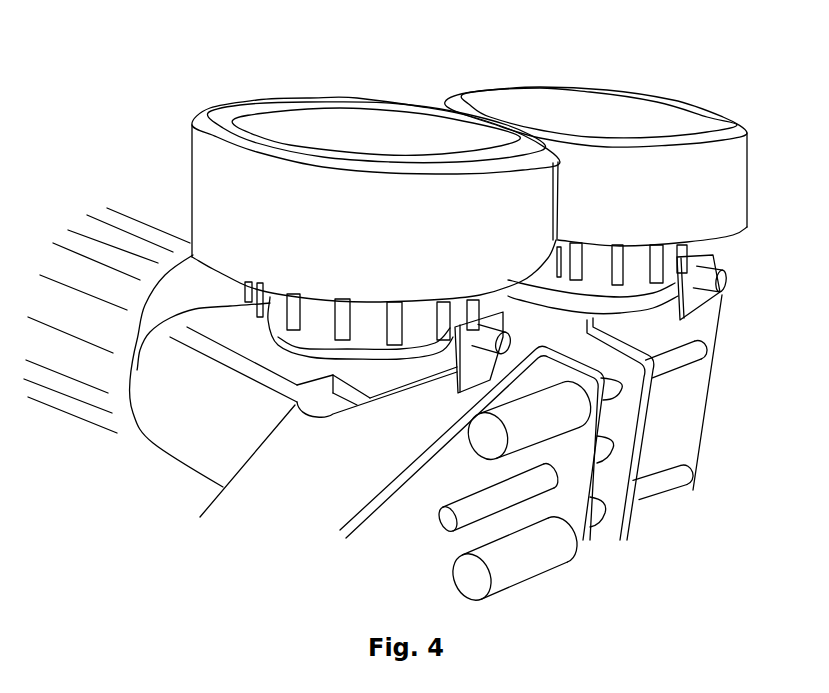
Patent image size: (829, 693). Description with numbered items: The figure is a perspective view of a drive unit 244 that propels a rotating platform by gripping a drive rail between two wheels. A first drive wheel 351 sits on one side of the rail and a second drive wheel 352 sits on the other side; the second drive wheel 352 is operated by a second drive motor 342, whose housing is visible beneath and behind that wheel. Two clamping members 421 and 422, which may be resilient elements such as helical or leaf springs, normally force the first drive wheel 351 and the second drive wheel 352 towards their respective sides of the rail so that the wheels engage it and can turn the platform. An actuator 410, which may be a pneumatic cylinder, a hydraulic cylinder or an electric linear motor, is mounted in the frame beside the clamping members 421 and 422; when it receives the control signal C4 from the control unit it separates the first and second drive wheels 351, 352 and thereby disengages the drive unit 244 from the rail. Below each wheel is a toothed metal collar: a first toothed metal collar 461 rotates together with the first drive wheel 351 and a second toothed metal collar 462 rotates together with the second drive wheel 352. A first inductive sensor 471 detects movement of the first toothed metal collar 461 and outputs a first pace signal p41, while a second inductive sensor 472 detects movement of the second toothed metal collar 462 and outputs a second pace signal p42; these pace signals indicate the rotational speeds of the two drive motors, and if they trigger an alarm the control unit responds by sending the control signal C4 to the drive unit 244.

The drive unit 244 is at (100, 79).
The first drive wheel 351 is at (588, 138).
The second drive wheel 352 is at (223, 202).
The first toothed metal collar 461 is at (641, 348).
The second toothed metal collar 462 is at (320, 354).
The second drive motor 342 is at (160, 359).
The first inductive sensor 471 is at (728, 313).
The second inductive sensor 472 is at (356, 414).
The first pace signal p41 is at (726, 282).
The second pace signal p42 is at (362, 451).
The control signal C4 is at (375, 530).
The actuator 410 is at (454, 515).
The clamping member 421 is at (598, 464).
The clamping member 422 is at (546, 572).